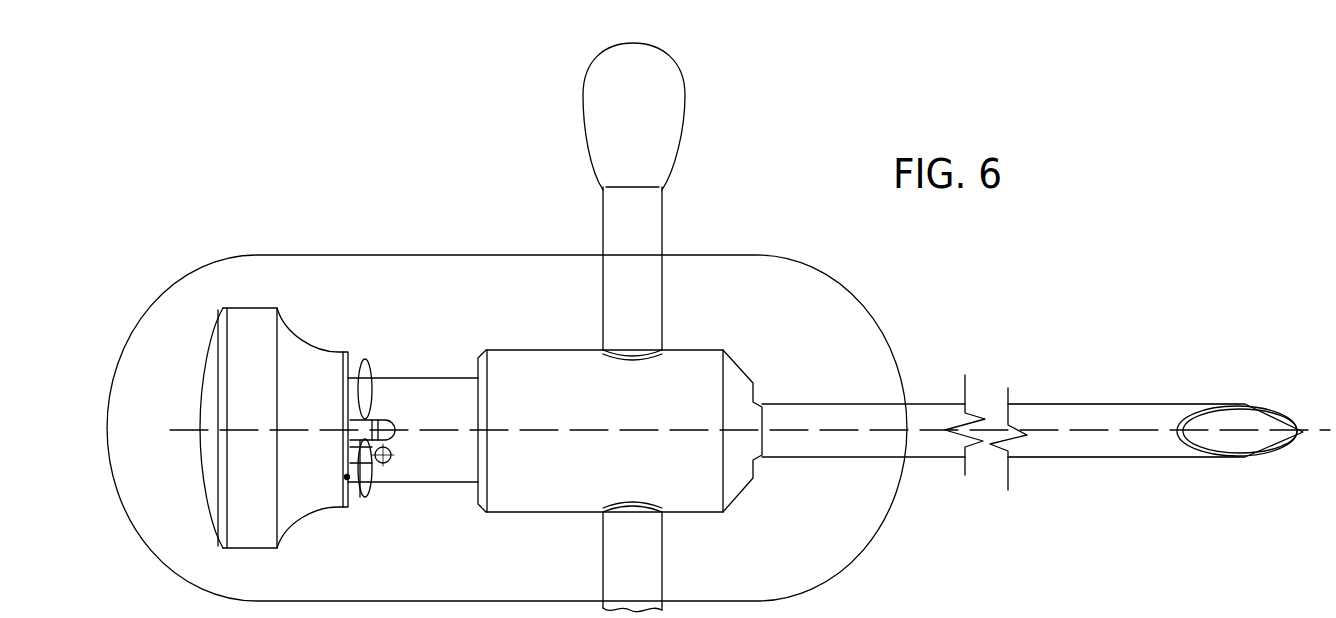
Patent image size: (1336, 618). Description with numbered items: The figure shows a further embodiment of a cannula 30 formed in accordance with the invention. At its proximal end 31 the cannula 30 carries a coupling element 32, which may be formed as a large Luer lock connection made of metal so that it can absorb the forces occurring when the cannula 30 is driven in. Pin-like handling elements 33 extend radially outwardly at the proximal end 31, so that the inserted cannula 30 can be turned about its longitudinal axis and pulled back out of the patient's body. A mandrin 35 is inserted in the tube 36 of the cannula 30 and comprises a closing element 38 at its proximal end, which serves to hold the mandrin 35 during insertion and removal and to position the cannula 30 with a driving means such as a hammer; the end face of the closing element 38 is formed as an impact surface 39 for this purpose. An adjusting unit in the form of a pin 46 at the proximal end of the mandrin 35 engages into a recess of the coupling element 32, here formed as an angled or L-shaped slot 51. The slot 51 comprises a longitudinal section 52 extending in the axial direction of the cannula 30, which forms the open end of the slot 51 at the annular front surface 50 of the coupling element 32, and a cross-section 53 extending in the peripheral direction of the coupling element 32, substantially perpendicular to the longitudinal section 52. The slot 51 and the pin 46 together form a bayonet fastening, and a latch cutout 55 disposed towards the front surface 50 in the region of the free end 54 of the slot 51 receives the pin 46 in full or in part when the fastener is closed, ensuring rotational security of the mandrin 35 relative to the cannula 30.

The cannula 30 is at (1066, 469).
The proximal end 31 is at (745, 505).
The coupling element 32 is at (448, 453).
The handling element 33 is at (670, 125).
The mandrin 35 is at (838, 450).
The tube 36 is at (1082, 418).
The closing element 38 is at (307, 502).
The impact surface 39 is at (203, 387).
The pin 46 is at (388, 462).
The annular front surface 50 is at (347, 477).
The slot 51 is at (382, 418).
The longitudinal section 52 is at (359, 392).
The cross-section 53 is at (388, 440).
The free end 54 is at (386, 470).
The latch cutout 55 is at (362, 457).